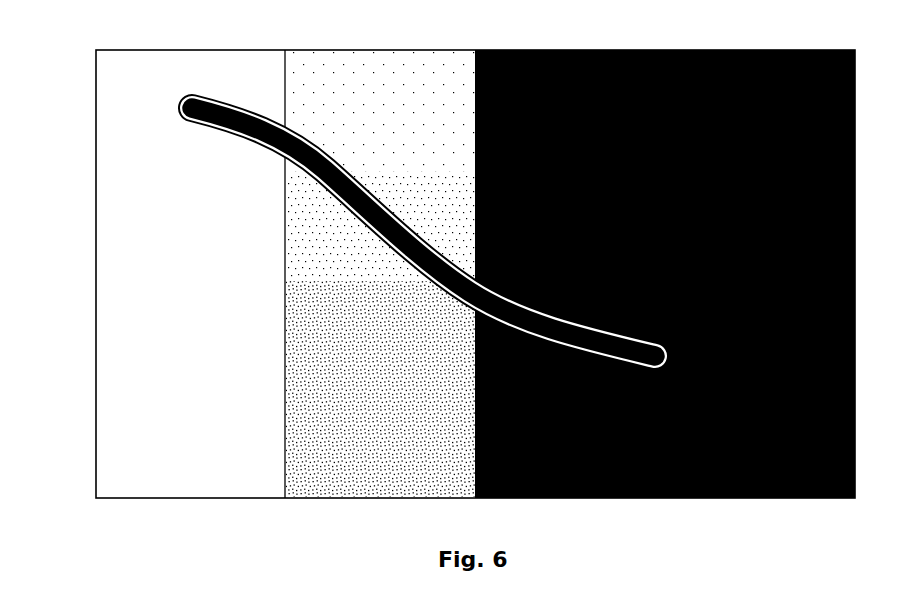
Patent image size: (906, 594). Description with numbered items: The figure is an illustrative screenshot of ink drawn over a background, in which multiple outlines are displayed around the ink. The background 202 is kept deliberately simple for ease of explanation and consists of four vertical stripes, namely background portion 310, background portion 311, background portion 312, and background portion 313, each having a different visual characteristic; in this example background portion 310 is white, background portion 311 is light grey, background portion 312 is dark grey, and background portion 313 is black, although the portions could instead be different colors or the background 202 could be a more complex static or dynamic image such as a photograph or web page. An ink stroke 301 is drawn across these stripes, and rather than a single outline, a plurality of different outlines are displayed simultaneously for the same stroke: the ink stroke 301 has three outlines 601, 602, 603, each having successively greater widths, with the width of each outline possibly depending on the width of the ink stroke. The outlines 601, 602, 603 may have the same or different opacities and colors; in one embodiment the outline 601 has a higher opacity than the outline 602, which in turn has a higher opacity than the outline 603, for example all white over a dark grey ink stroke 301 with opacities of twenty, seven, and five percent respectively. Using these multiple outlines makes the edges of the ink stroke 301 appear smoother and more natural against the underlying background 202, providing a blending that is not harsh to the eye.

The background 202 is at (96, 351).
The ink stroke 301 is at (351, 232).
The first outline 601 is at (200, 124).
The second outline 602 is at (213, 133).
The third outline 603 is at (225, 141).
The background portion 310 is at (211, 450).
The background portion 311 is at (370, 450).
The background portion 312 is at (580, 451).
The background portion 313 is at (775, 451).